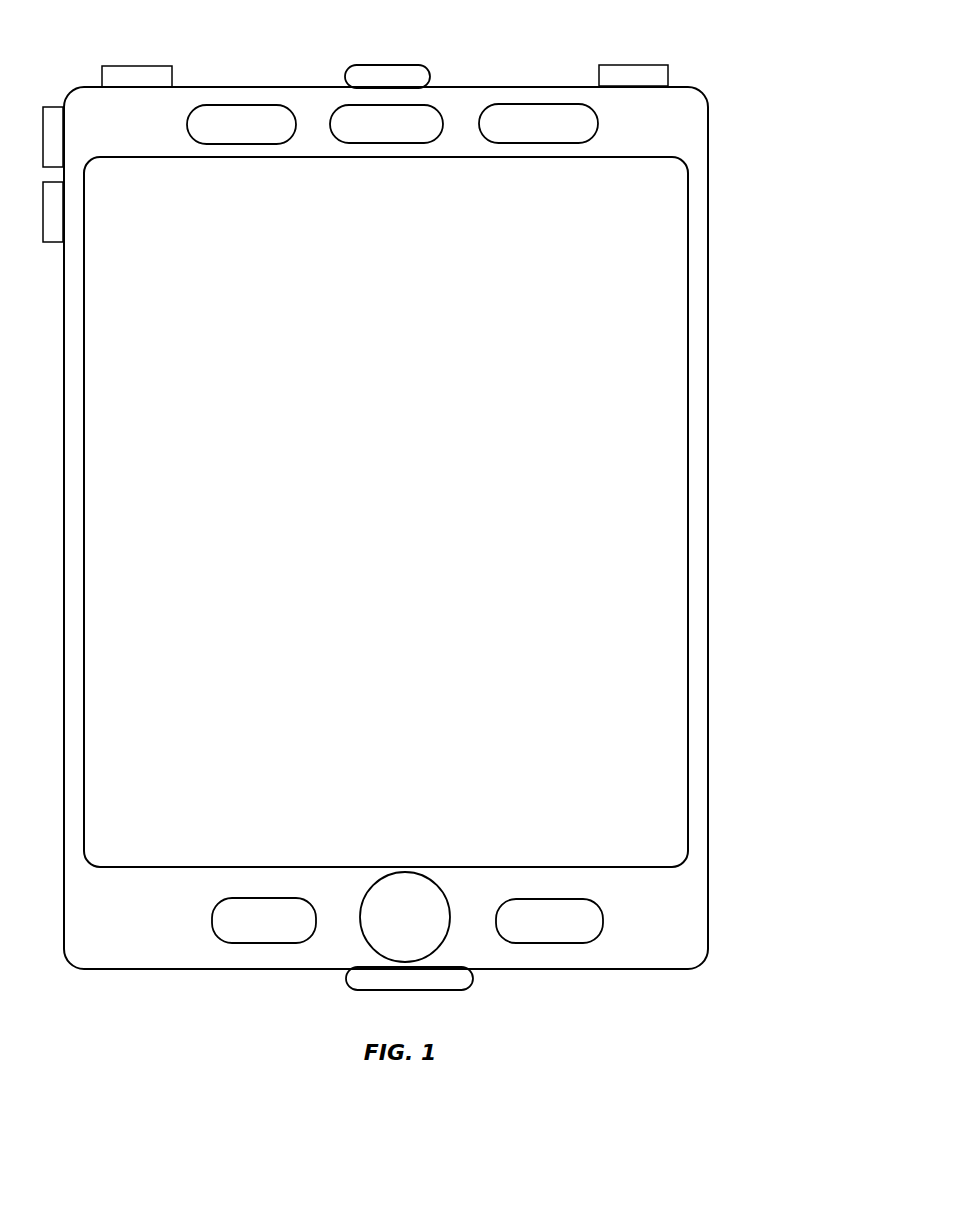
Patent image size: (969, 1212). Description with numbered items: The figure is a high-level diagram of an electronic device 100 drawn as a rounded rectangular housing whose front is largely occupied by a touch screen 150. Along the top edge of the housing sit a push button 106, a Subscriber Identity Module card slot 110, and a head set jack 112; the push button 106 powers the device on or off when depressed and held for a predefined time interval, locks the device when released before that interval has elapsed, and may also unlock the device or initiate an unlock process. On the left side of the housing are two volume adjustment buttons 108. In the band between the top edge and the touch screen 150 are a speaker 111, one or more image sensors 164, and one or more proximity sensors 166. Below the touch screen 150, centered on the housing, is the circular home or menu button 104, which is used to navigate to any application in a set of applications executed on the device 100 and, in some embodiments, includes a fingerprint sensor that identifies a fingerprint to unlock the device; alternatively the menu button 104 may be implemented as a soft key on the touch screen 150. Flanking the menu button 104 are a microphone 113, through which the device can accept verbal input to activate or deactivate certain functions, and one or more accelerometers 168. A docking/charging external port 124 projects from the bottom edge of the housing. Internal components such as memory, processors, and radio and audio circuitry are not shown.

The electronic device 100 is at (738, 89).
The menu button 104 is at (405, 917).
The push button 106 is at (137, 76).
The volume adjustment buttons 108 is at (53, 174).
The SIM card slot 110 is at (387, 76).
The speaker 111 is at (241, 124).
The head set jack 112 is at (633, 75).
The microphone 113 is at (264, 920).
The docking/charging external port 124 is at (409, 978).
The touch screen 150 is at (690, 419).
The image sensors 164 is at (386, 124).
The proximity sensors 166 is at (538, 123).
The accelerometers 168 is at (549, 921).